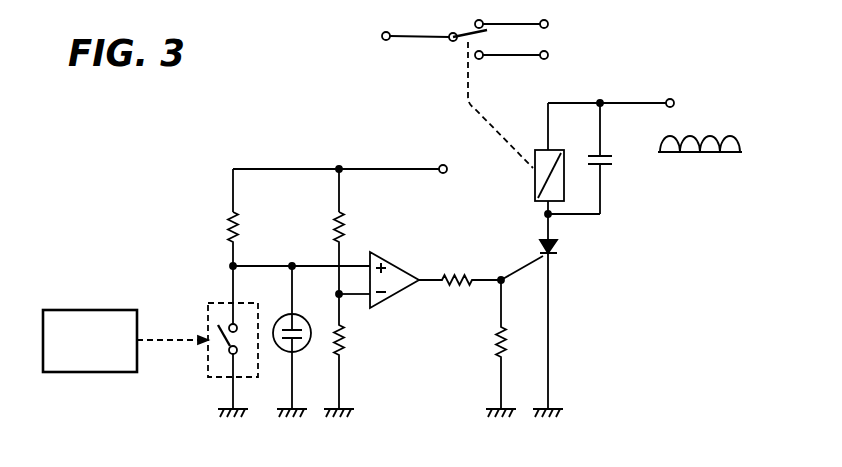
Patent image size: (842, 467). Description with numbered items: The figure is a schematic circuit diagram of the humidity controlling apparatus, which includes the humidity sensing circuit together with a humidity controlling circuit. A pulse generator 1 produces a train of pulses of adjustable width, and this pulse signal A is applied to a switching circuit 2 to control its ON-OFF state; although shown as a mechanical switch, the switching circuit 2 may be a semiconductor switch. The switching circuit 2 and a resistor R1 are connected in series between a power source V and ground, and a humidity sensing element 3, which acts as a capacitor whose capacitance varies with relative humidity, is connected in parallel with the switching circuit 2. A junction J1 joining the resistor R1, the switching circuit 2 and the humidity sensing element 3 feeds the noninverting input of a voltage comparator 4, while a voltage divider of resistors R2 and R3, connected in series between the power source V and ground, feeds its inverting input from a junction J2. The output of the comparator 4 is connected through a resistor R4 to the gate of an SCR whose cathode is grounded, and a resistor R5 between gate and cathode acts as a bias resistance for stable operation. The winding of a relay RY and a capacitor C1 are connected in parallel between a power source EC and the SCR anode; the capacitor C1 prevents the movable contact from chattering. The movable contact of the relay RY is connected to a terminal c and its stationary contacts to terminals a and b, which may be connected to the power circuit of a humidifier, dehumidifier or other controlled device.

The pulse generator 1 is at (97, 310).
The switching circuit 2 is at (207, 366).
The humidity sensing element 3 is at (300, 352).
The voltage comparator 4 is at (397, 263).
The pulse signal A is at (182, 340).
The junction J1 is at (231, 264).
The junction J2 is at (340, 296).
The resistor R1 is at (238, 226).
The resistor R2 is at (344, 226).
The resistor R3 is at (343, 352).
The resistor R4 is at (458, 272).
The resistor R5 is at (497, 346).
The relay RY is at (535, 183).
The capacitor C1 is at (610, 163).
The silicon controlled rectifier SCR is at (558, 246).
The power source EC is at (628, 104).
The power source V is at (355, 170).
The terminal a is at (548, 55).
The terminal b is at (548, 24).
The terminal c is at (383, 39).